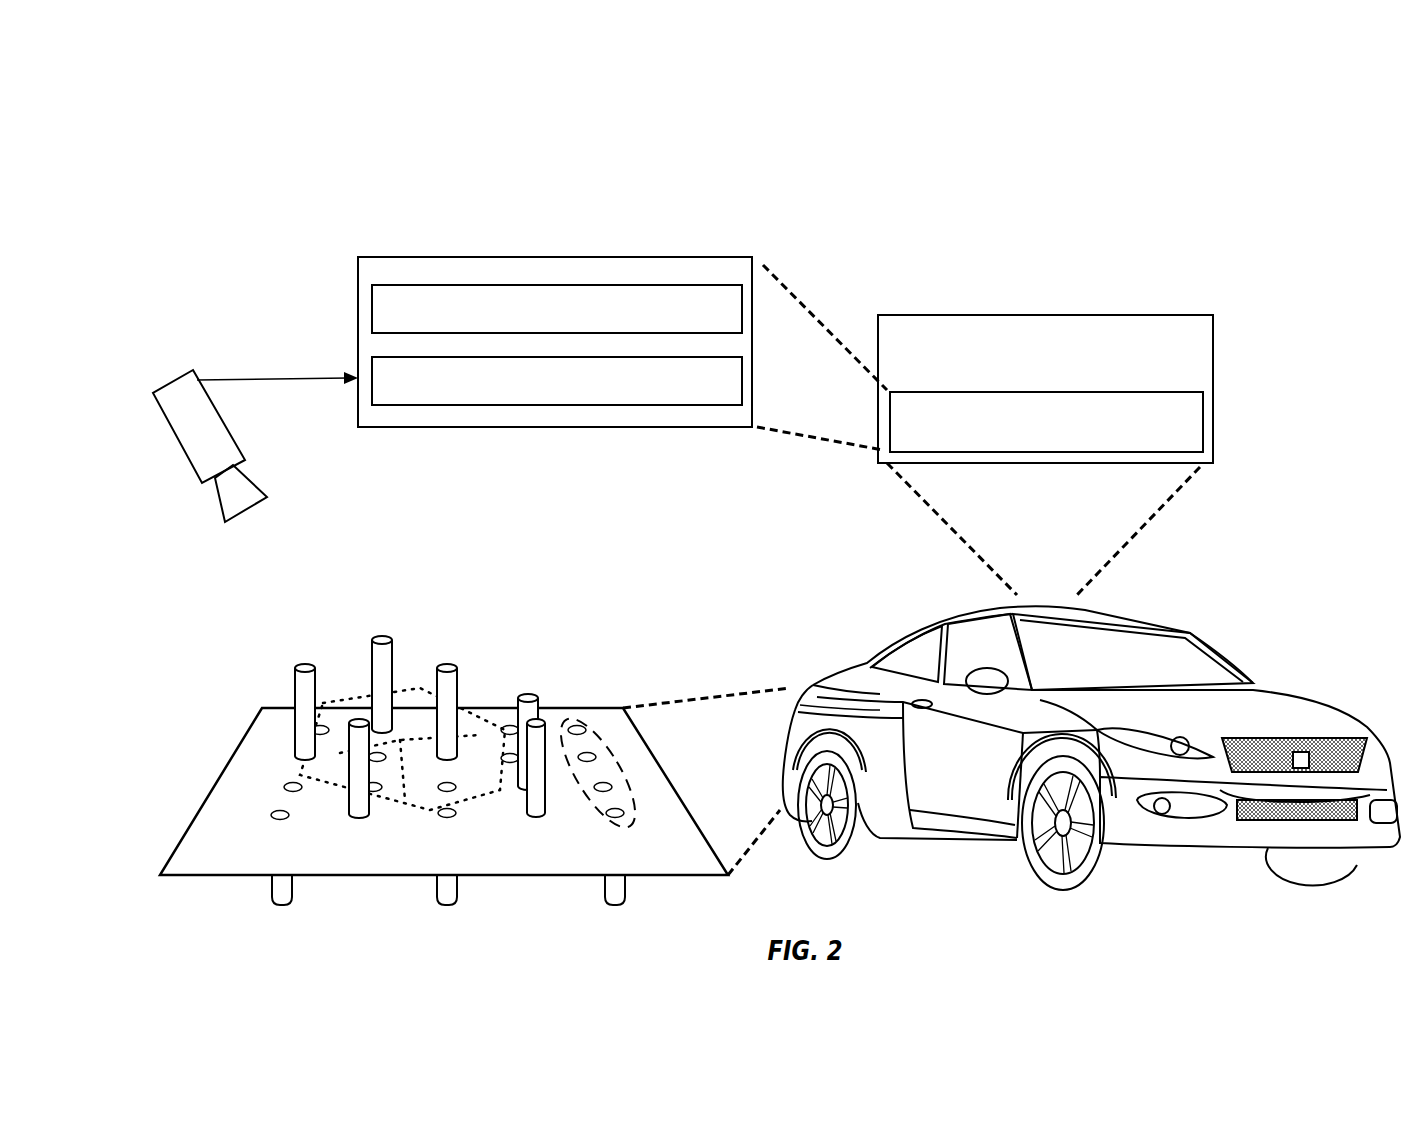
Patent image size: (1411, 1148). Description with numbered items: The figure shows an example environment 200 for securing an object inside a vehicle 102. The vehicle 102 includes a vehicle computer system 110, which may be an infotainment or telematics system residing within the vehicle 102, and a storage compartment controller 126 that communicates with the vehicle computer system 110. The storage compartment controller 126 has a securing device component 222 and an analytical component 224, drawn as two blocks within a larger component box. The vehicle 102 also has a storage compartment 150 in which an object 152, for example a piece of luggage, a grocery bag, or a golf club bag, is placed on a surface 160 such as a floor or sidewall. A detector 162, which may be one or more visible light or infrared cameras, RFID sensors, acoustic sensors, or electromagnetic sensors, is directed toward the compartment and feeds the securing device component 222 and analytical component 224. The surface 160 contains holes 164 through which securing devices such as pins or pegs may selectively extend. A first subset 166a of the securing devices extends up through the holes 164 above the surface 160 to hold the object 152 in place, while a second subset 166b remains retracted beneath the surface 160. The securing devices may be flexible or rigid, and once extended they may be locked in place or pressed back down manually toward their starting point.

The environment for securing an object 200 is at (140, 105).
The detector 162 is at (148, 390).
The securing device component 222 is at (557, 309).
The analytical component 224 is at (557, 381).
The vehicle computer system 110 is at (928, 315).
The storage compartment controller 126 is at (1198, 392).
The vehicle 102 is at (883, 625).
The storage compartment 150 is at (818, 683).
The object 152 is at (350, 690).
The surface 160 is at (217, 782).
The holes 164 is at (585, 718).
The first subset of securing devices 166a is at (300, 665).
The second subset of securing devices 166b is at (288, 905).